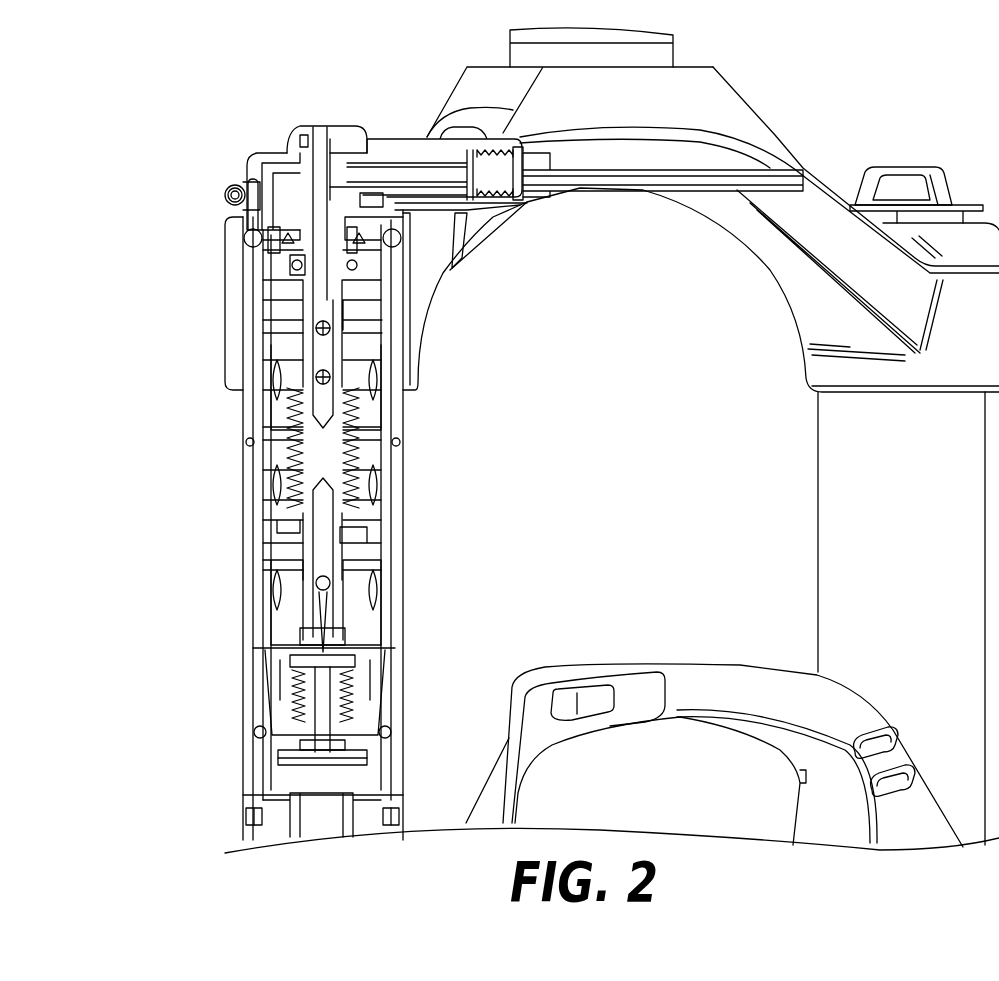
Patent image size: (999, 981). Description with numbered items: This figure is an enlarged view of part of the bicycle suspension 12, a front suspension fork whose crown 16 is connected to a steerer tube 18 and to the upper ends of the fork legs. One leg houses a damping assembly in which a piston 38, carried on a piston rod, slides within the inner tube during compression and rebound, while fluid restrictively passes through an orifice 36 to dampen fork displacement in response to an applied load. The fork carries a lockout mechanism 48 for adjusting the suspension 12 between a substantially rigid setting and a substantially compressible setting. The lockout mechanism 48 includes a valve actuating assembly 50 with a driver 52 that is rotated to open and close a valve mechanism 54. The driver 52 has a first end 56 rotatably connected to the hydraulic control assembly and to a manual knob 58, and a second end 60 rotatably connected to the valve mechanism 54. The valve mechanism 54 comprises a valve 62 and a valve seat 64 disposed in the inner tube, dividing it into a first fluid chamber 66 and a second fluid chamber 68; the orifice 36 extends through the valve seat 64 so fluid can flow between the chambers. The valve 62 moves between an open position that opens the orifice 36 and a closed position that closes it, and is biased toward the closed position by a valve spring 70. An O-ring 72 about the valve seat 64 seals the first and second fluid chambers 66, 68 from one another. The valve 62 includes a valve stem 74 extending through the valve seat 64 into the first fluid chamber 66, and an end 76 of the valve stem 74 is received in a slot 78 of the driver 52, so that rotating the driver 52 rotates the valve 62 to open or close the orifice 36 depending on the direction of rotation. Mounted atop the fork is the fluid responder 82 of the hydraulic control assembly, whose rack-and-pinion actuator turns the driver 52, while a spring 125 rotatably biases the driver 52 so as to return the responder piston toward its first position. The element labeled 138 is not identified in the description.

The bicycle suspension 12 is at (172, 342).
The crown 16 is at (722, 108).
The steerer tube 18 is at (683, 36).
The orifice 36 is at (296, 742).
The piston 38 is at (262, 818).
The lockout mechanism 48 is at (205, 395).
The valve actuating assembly 50 is at (205, 222).
The driver 52 is at (330, 452).
The valve mechanism 54 is at (291, 723).
The first end 56 is at (297, 267).
The manual knob 58 is at (303, 128).
The second end 60 is at (367, 647).
The valve 62 is at (355, 760).
The valve seat 64 is at (360, 735).
The first fluid chamber 66 is at (357, 618).
The second fluid chamber 68 is at (370, 782).
The valve spring 70 is at (290, 697).
The O-ring 72 is at (254, 732).
The valve stem 74 is at (318, 640).
The end 76 is at (323, 614).
The slot 78 is at (316, 582).
The fluid responder 82 is at (386, 120).
The spring 125 is at (357, 418).
The cable clamp pad 138 is at (795, 170).